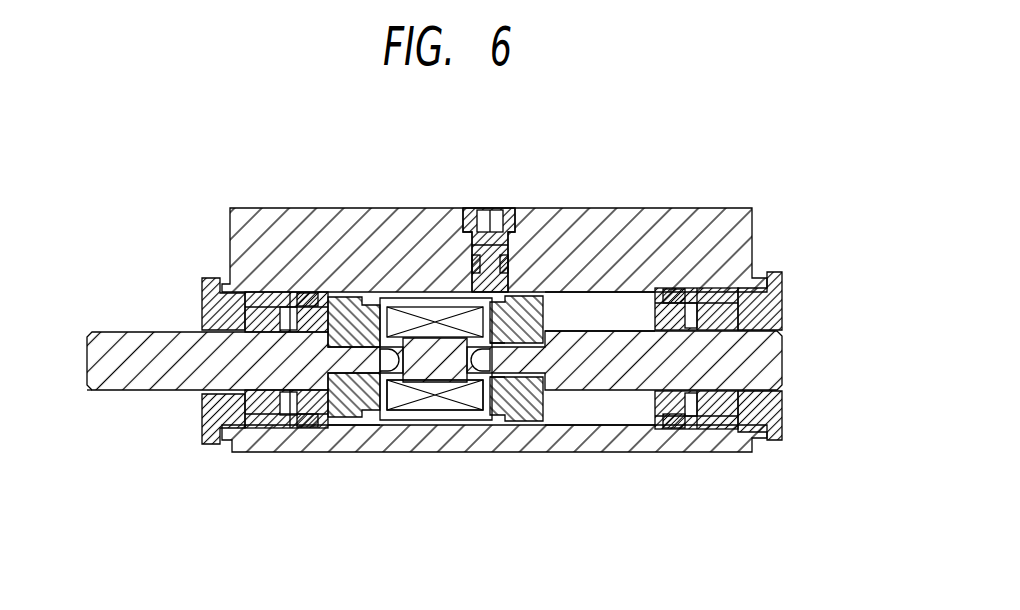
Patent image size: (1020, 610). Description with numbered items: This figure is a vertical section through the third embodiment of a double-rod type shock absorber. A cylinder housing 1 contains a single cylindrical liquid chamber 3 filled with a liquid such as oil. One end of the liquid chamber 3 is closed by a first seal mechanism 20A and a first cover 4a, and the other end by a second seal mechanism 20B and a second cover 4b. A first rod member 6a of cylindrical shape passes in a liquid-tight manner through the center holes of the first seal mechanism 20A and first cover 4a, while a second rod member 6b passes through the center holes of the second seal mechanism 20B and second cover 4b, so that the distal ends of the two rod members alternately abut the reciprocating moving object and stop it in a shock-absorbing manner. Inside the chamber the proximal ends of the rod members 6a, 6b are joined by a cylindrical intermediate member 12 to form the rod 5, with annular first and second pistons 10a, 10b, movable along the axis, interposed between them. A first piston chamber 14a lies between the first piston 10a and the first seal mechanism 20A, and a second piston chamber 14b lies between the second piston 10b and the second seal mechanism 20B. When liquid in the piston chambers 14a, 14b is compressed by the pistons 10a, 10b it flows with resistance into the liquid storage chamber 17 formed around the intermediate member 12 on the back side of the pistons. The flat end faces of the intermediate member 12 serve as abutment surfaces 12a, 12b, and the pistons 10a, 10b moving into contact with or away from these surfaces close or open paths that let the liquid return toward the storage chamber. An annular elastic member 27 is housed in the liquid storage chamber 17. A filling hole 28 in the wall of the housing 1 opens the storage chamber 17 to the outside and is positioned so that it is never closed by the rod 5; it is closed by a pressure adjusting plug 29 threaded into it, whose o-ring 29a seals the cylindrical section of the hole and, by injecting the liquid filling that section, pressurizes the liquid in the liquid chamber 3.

The cylinder housing 1 is at (320, 245).
The liquid chamber 3 is at (557, 302).
The first cover 4a is at (205, 292).
The second cover 4b is at (782, 300).
The rod 5 is at (167, 407).
The first rod member 6a is at (130, 355).
The second rod member 6b is at (760, 358).
The first piston 10a is at (344, 422).
The second piston 10b is at (522, 413).
The intermediate member 12 is at (425, 402).
The abutment surface 12a is at (372, 407).
The abutment surface 12b is at (497, 405).
The first piston chamber 14a is at (332, 428).
The second piston chamber 14b is at (608, 405).
The liquid storage chamber 17 is at (428, 300).
The first seal mechanism 20A is at (268, 290).
The second seal mechanism 20B is at (702, 284).
The annular elastic member 27 is at (457, 402).
The filling hole 28 is at (503, 235).
The pressure adjusting plug 29 is at (490, 222).
The o-ring 29a is at (468, 262).